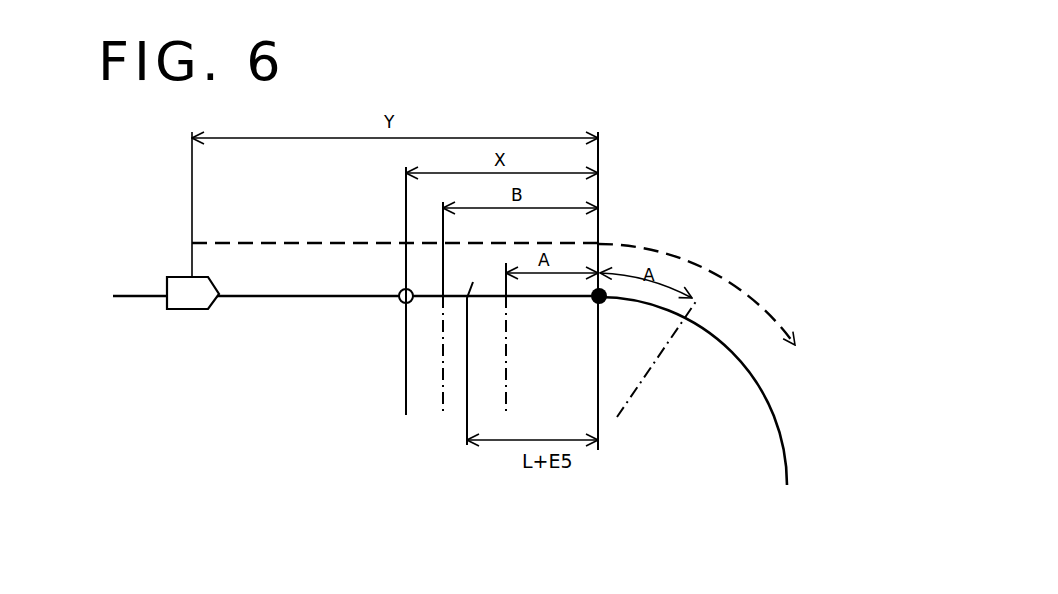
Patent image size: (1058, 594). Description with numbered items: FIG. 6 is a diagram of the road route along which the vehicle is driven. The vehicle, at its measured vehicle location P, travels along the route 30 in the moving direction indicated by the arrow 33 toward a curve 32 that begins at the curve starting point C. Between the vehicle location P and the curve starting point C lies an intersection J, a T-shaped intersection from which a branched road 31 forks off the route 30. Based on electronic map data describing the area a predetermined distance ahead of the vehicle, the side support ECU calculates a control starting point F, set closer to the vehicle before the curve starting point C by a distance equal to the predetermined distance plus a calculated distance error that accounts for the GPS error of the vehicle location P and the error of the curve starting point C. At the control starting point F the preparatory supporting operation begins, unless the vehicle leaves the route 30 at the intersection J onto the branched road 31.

The route 30 is at (377, 300).
The branched road 31 is at (402, 383).
The curve 32 is at (773, 410).
The arrow 33 is at (645, 240).
The vehicle location P is at (191, 276).
The curve starting point C is at (594, 307).
The intersection J is at (503, 302).
The control starting point F is at (480, 271).